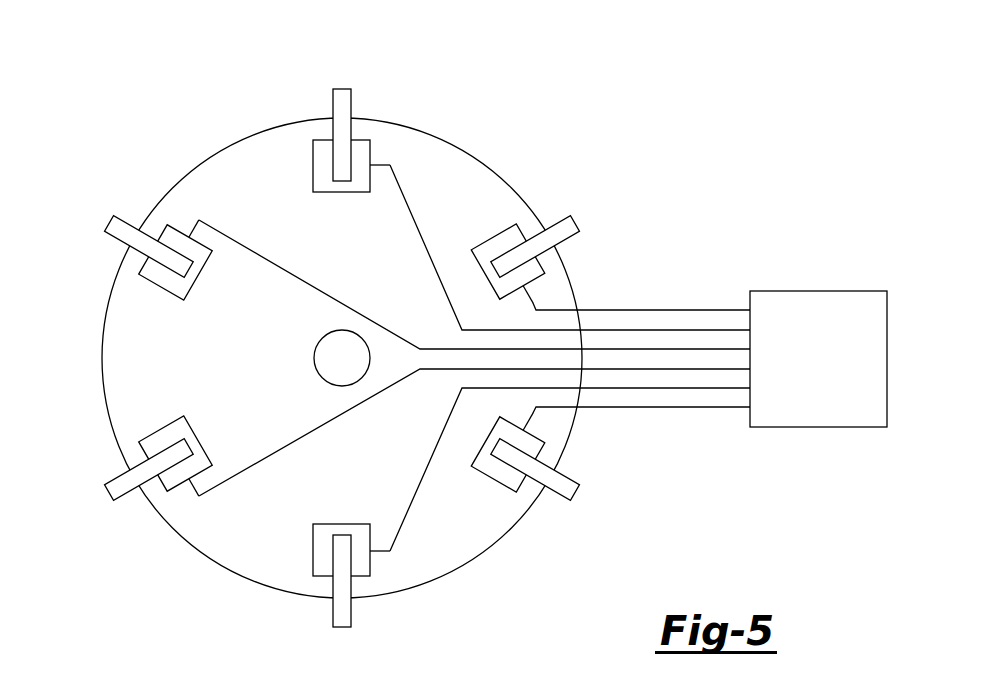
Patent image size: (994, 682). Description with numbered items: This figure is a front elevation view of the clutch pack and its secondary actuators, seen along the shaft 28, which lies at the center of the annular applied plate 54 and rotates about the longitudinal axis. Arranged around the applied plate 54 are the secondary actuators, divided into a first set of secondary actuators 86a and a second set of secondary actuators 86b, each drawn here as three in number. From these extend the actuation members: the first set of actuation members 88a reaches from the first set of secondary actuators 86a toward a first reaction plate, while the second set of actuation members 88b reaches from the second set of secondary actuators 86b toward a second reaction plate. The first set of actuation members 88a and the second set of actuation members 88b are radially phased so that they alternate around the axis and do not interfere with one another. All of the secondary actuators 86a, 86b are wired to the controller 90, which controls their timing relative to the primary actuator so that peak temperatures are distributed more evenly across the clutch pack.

The applied plate 54 is at (248, 162).
The shaft 28 is at (322, 358).
The controller 90 is at (832, 372).
The first set of secondary actuators 86a is at (378, 150).
The second set of secondary actuators 86b is at (533, 226).
The first set of actuation members 88a is at (351, 100).
The second set of actuation members 88b is at (574, 234).